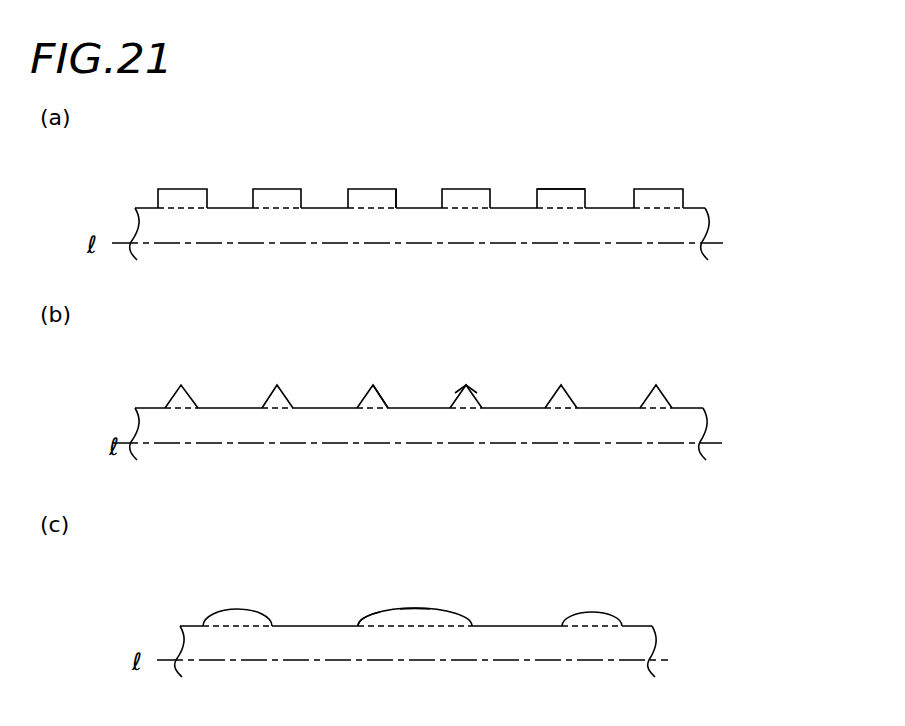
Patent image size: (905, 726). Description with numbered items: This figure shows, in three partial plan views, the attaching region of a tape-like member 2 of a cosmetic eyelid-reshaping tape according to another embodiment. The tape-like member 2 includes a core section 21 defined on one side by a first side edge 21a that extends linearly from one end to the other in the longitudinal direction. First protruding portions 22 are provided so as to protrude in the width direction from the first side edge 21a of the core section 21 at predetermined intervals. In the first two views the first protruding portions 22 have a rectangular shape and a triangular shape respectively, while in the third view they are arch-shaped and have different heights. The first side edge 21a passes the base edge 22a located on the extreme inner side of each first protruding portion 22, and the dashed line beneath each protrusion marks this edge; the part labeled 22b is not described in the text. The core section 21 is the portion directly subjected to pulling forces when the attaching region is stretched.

The tape-like member 2 is at (722, 222).
The core section 21 is at (651, 233).
The first side edge 21a is at (188, 207).
The first protruding portion 22 is at (271, 203).
The base edge 22a is at (399, 207).
The top surface of projection 22b is at (562, 189).